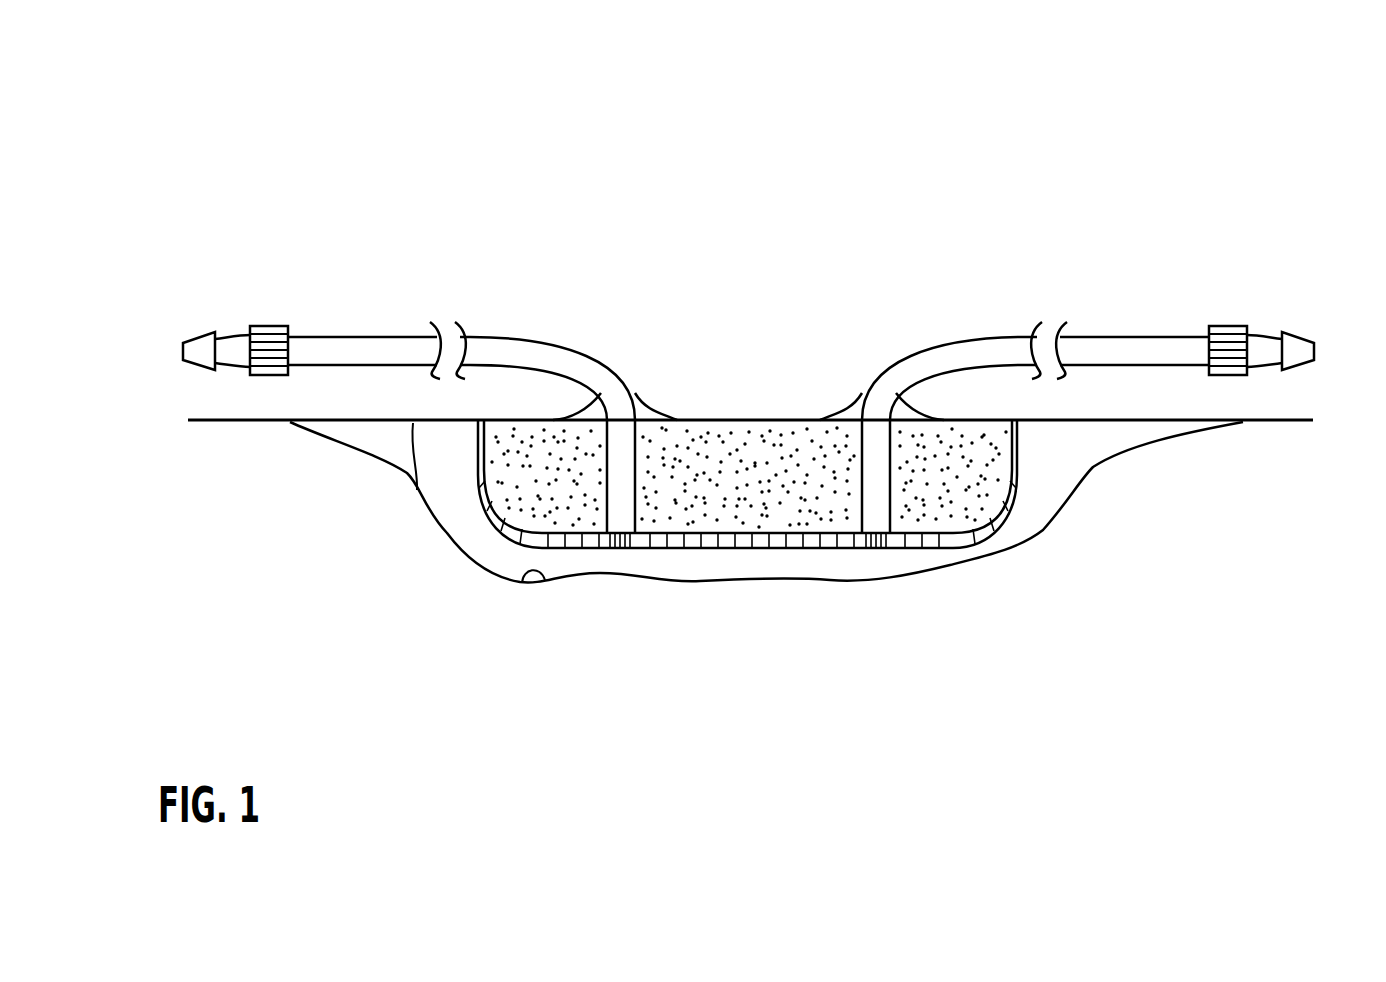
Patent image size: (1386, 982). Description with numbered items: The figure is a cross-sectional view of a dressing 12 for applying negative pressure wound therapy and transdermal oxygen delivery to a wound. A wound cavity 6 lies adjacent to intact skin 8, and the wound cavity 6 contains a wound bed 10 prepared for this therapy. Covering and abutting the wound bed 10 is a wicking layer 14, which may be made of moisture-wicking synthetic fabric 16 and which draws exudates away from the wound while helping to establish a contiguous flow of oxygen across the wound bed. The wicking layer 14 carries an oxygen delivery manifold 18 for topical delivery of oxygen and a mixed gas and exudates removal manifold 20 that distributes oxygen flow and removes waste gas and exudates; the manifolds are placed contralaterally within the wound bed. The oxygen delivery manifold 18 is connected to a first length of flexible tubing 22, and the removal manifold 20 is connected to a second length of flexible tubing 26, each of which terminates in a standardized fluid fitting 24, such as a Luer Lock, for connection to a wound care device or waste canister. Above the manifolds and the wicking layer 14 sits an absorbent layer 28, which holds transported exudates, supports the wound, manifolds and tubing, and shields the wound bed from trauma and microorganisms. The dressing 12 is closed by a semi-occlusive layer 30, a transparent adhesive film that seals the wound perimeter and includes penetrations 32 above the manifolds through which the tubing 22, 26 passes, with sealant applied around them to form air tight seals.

The wound cavity 6 is at (463, 565).
The intact skin 8 is at (225, 419).
The wound bed 10 is at (522, 583).
The dressing 12 is at (382, 140).
The wicking layer 14 is at (1007, 543).
The moisture-wicking synthetic fabric 16 is at (923, 545).
The oxygen delivery manifold 18 is at (860, 542).
The mixed gas and exudates removal manifold 20 is at (637, 545).
The first length of flexible tubing 22 is at (1107, 337).
The standardized fluid fitting 24 is at (236, 327).
The second length of flexible tubing 26 is at (377, 335).
The absorbent layer 28 is at (1030, 441).
The semi-occlusive layer 30 is at (417, 490).
The penetrations 32 is at (645, 392).